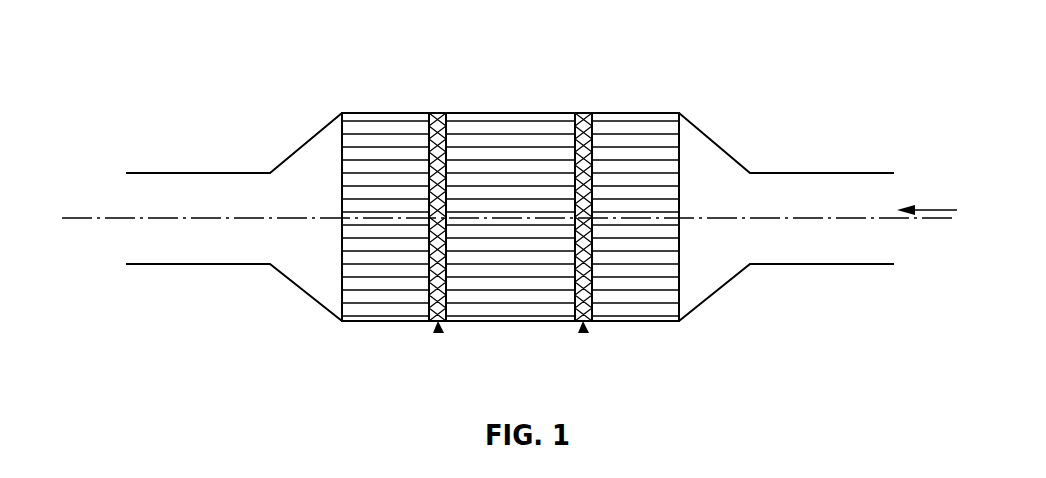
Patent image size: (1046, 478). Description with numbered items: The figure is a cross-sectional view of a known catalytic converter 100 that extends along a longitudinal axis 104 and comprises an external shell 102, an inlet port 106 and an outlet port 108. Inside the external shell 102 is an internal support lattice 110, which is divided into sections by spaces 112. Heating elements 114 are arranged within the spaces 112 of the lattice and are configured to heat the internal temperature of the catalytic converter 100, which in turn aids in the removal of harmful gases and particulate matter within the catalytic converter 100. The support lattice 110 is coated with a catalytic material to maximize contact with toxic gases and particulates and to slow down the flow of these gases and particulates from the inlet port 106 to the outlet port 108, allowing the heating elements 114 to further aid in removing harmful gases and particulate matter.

The catalytic converter 100 is at (708, 68).
The external shell 102 is at (470, 113).
The longitudinal axis 104 is at (84, 217).
The inlet port 106 is at (775, 173).
The outlet port 108 is at (240, 173).
The internal support lattice 110 is at (540, 125).
The spaces 112 is at (434, 113).
The heating elements 114 is at (441, 331).